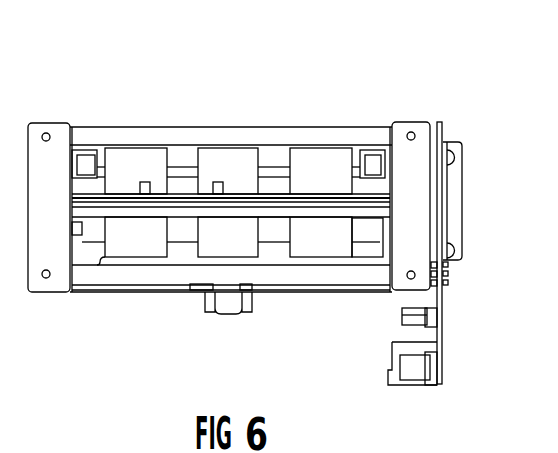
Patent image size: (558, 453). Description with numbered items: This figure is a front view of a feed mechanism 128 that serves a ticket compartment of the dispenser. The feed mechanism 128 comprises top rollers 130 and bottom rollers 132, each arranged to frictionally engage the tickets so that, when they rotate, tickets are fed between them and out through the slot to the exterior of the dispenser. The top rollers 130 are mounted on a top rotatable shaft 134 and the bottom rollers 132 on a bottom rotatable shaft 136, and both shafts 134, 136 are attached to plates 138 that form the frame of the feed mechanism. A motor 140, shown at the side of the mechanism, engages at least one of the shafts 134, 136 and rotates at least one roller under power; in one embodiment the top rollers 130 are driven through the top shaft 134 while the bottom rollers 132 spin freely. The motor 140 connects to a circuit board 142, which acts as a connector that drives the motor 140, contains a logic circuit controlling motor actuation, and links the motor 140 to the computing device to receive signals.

The feed mechanism 128 is at (198, 58).
The top rollers 130 is at (147, 168).
The bottom rollers 132 is at (153, 240).
The top rotatable shaft 134 is at (276, 178).
The bottom rotatable shaft 136 is at (268, 230).
The plates 138 is at (33, 290).
The motor 140 is at (448, 188).
The circuit board 142 is at (439, 122).